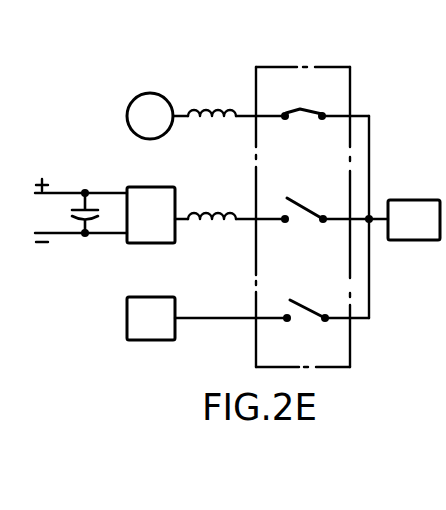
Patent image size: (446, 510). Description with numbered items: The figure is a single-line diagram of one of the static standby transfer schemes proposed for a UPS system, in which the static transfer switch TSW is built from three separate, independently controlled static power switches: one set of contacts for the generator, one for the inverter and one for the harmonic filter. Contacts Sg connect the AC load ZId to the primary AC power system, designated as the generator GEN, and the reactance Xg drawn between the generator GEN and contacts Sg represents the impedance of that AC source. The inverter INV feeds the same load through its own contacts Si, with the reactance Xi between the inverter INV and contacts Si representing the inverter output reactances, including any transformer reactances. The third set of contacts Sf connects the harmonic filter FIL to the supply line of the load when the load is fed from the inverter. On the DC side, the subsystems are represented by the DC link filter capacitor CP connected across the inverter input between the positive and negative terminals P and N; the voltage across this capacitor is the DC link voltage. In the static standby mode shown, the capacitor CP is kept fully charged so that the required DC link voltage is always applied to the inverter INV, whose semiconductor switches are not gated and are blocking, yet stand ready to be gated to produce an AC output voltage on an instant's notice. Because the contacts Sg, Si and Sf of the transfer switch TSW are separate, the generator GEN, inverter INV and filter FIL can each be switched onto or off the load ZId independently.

The static transfer switch TSW is at (273, 67).
The generator GEN is at (150, 116).
The reactance Xg is at (222, 106).
The contacts Sg is at (301, 118).
The positive DC bus terminal P is at (81, 180).
The negative DC bus terminal N is at (81, 247).
The DC link filter capacitor CP is at (74, 211).
The inverter INV is at (151, 215).
The reactance Xi is at (220, 207).
The contacts Si is at (306, 216).
The harmonic filter FIL is at (207, 318).
The contacts Sf is at (306, 314).
The AC load ZId is at (414, 220).